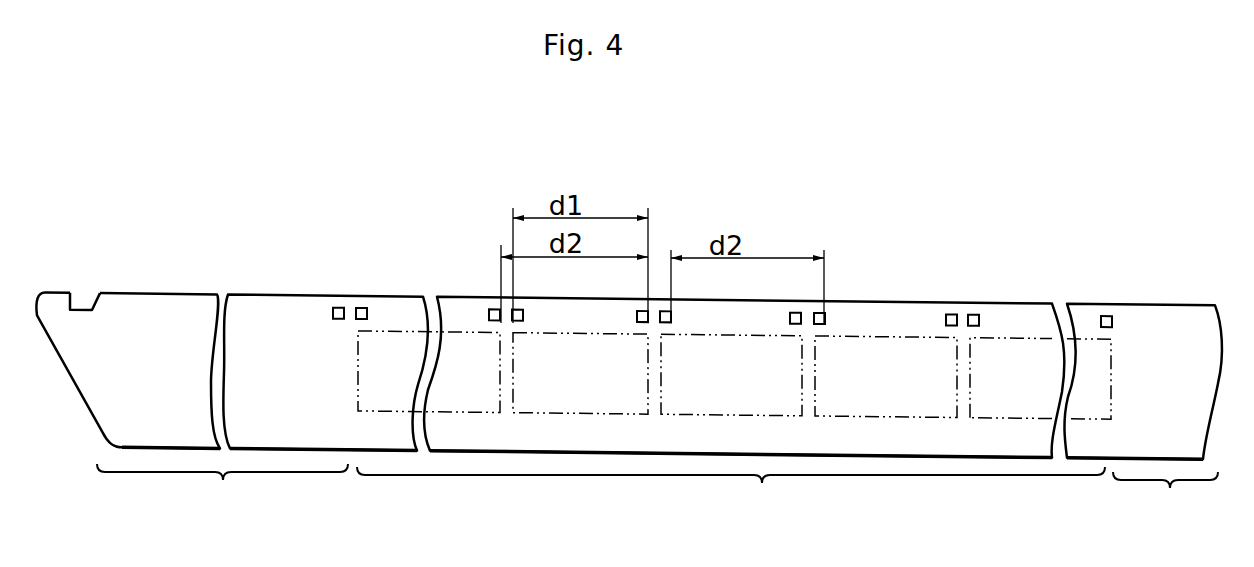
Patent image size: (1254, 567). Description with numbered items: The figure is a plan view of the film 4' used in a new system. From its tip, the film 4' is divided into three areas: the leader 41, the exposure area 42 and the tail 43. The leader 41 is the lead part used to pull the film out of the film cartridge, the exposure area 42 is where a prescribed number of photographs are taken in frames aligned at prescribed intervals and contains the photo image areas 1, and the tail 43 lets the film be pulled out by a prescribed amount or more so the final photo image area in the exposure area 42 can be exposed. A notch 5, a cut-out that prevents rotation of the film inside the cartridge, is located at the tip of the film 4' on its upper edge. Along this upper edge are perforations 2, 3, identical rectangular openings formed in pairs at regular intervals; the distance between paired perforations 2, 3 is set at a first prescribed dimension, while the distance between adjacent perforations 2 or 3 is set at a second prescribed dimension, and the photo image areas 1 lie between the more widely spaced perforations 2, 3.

The photo image area 1 is at (1135, 440).
The perforation 2 is at (366, 308).
The perforation 3 is at (335, 308).
The photographic film 4' is at (627, 376).
The notch 5 is at (85, 300).
The leader 41 is at (222, 488).
The exposure area 42 is at (731, 494).
The tail 43 is at (1165, 499).